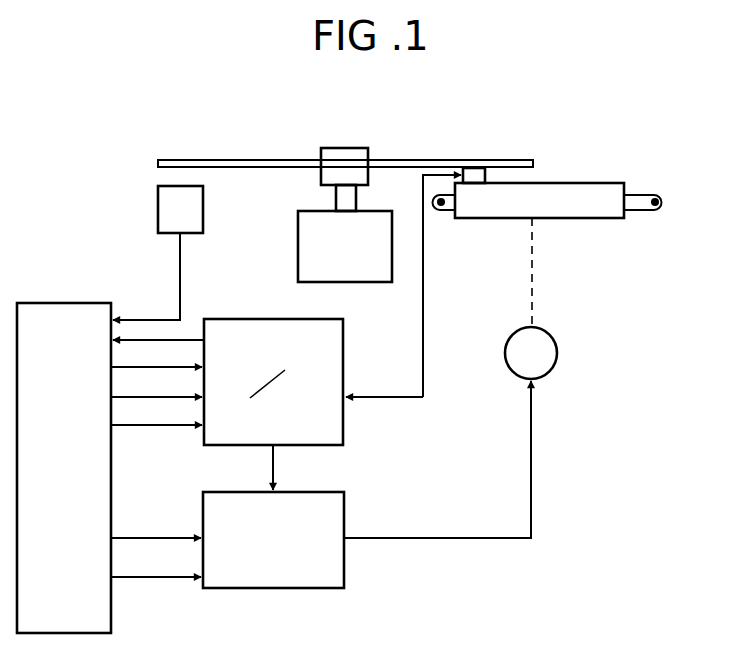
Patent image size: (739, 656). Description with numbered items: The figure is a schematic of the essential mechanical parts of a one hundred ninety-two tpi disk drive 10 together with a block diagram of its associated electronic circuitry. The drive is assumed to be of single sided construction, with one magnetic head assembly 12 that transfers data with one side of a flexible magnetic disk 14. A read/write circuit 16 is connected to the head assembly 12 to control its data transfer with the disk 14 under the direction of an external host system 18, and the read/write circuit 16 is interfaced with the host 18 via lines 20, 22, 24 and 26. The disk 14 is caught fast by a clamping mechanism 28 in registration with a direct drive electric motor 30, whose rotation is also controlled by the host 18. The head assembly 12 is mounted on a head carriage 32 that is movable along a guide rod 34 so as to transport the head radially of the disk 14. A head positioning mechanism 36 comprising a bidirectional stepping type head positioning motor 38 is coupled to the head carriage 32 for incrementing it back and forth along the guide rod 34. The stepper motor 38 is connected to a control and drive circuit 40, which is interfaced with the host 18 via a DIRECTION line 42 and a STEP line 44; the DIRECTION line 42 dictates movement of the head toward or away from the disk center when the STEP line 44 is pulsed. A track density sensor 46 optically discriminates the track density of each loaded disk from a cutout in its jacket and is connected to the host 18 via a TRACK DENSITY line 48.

The disk drive 10 is at (88, 162).
The magnetic head assembly 12 is at (487, 178).
The flexible magnetic disk 14 is at (408, 159).
The read/write circuit 16 is at (344, 368).
The host system 18 is at (55, 303).
The line 20 is at (185, 338).
The line 22 is at (156, 382).
The line 24 is at (156, 412).
The line 26 is at (163, 426).
The clamping mechanism 28 is at (340, 147).
The direct drive electric motor 30 is at (298, 213).
The head carriage 32 is at (603, 191).
The guide rod 34 is at (649, 196).
The head positioning mechanism 36 is at (574, 314).
The head positioning motor 38 is at (555, 366).
The control and drive circuit 40 is at (347, 528).
The DIRECTION line 42 is at (153, 537).
The STEP line 44 is at (151, 577).
The track density sensor 46 is at (203, 222).
The TRACK DENSITY line 48 is at (136, 318).